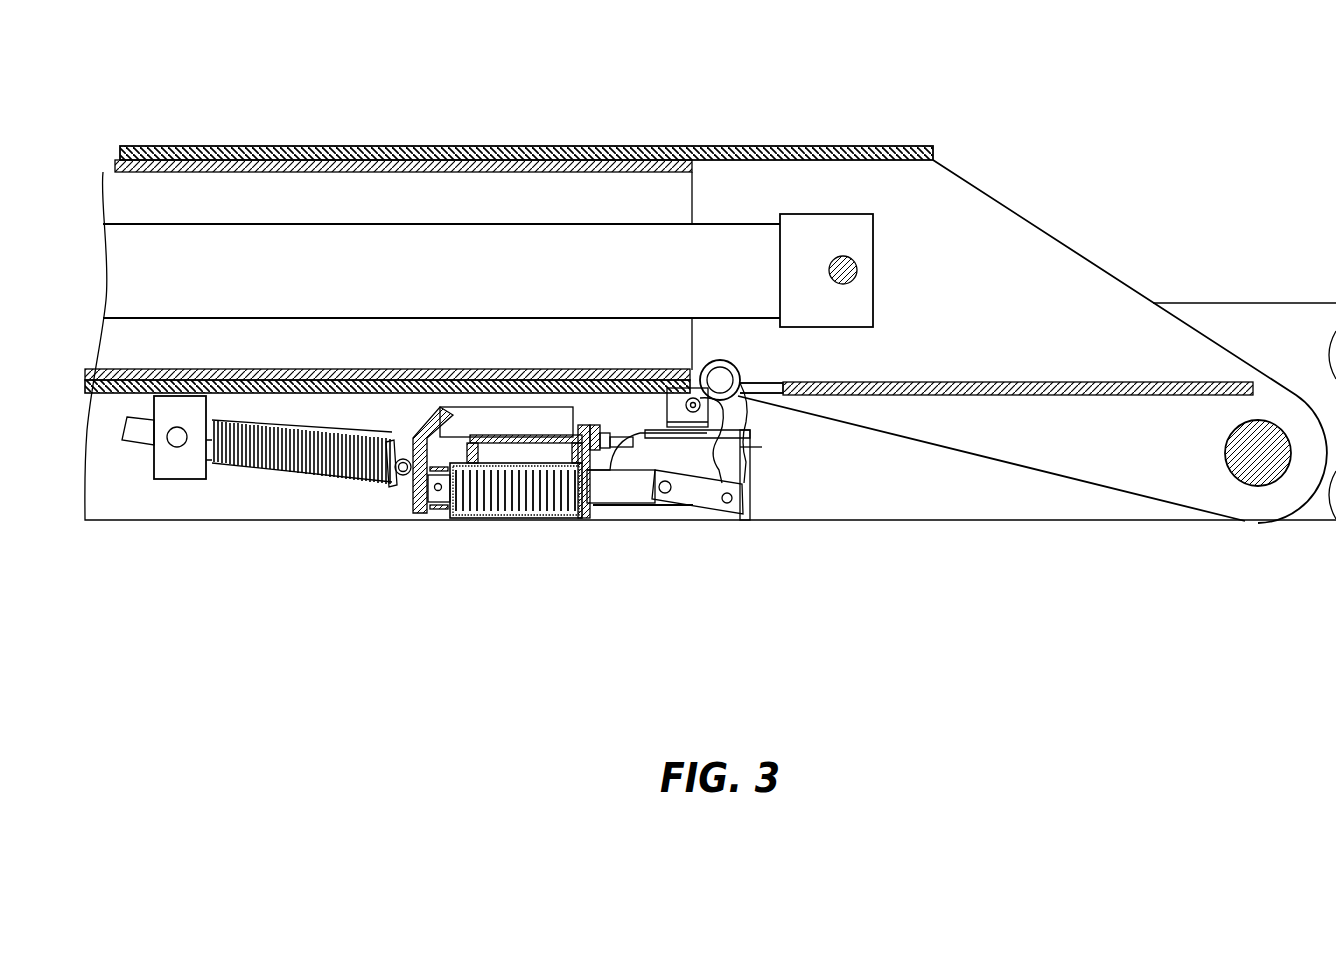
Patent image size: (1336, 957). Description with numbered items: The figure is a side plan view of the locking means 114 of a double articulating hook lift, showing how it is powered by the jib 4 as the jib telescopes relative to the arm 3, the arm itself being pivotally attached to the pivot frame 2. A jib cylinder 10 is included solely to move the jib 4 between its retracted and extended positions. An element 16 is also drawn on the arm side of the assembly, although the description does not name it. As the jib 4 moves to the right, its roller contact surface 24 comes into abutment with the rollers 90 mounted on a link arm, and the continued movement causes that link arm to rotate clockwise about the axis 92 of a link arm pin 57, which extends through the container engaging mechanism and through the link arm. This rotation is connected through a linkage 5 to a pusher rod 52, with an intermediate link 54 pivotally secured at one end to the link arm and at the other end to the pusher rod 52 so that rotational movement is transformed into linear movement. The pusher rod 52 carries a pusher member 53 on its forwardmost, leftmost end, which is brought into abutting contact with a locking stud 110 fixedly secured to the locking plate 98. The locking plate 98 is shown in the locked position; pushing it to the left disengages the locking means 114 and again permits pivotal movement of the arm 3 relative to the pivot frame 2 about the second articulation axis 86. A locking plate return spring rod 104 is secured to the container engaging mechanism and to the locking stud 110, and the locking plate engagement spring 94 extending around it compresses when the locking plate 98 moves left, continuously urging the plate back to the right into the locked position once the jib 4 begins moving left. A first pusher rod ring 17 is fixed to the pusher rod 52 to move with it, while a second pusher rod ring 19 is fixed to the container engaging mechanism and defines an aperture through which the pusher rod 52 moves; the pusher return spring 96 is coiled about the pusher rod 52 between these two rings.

The pivot frame 2 is at (1088, 521).
The arm 3 is at (852, 147).
The jib 4 is at (667, 160).
The linkage 5 is at (750, 447).
The jib cylinder 10 is at (753, 233).
The arm 16 is at (970, 183).
The first pusher rod ring 17 is at (585, 478).
The second pusher rod ring 19 is at (448, 520).
The roller contact surface 24 is at (697, 368).
The pusher rod 52 is at (630, 493).
The pusher member 53 is at (413, 407).
The intermediate link 54 is at (693, 497).
The link arm pin 57 is at (693, 403).
The second articulation axis 86 is at (1248, 477).
The rollers 90 is at (745, 378).
The axis 92 is at (710, 468).
The locking plate engagement spring 94 is at (263, 470).
The pusher return spring 96 is at (467, 513).
The locking plate 98 is at (395, 398).
The locking plate return spring rod 104 is at (134, 438).
The locking stud 110 is at (398, 483).
The locking means 114 is at (510, 400).